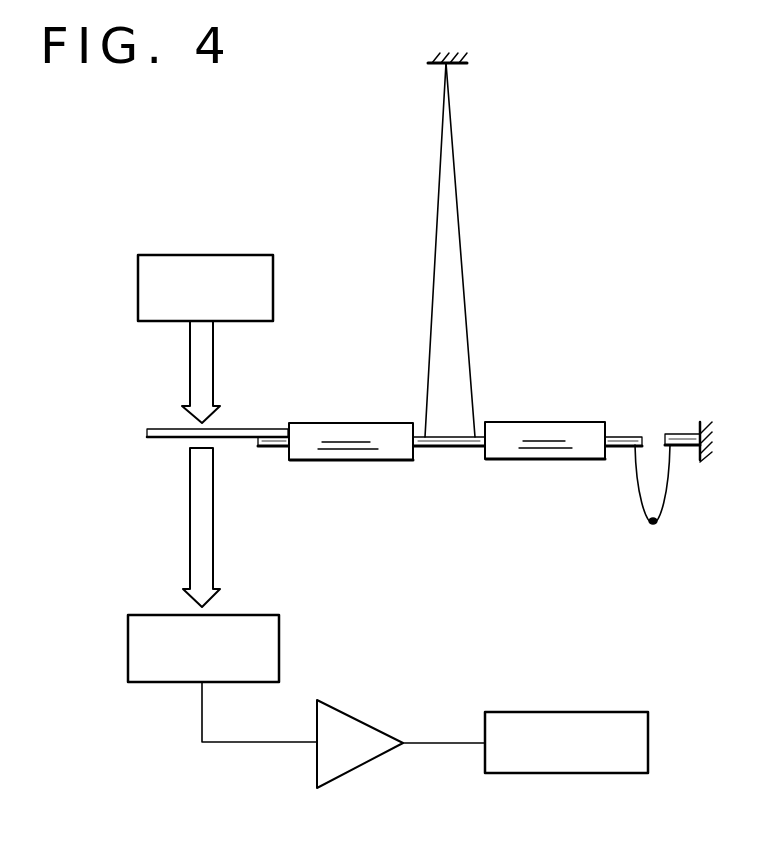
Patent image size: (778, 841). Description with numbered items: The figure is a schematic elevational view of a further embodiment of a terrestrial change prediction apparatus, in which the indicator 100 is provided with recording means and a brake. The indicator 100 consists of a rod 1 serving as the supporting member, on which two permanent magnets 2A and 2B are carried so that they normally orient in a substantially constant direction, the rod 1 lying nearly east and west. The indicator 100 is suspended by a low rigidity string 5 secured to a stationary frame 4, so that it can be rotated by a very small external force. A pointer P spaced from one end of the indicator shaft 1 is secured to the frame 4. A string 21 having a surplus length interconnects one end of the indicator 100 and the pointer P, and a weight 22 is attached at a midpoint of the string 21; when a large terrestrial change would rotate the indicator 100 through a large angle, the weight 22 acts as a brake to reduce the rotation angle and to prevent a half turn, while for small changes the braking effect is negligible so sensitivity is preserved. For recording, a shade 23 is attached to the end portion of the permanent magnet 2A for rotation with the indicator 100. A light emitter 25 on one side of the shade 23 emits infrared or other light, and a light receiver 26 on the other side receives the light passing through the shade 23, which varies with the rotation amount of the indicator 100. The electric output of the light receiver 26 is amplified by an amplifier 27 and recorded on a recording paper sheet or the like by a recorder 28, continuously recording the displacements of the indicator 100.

The rod 1 is at (452, 446).
The permanent magnet 2A is at (320, 423).
The permanent magnet 2B is at (575, 422).
The stationary frame 4 is at (463, 57).
The low rigidity string 5 is at (462, 243).
The string 21 is at (667, 502).
The weight 22 is at (650, 527).
The shade 23 is at (235, 438).
The light emitter 25 is at (225, 255).
The light receiver 26 is at (265, 615).
The amplifier 27 is at (345, 710).
The recorder 28 is at (648, 748).
The indicator 100 is at (500, 355).
The pointer P is at (685, 445).